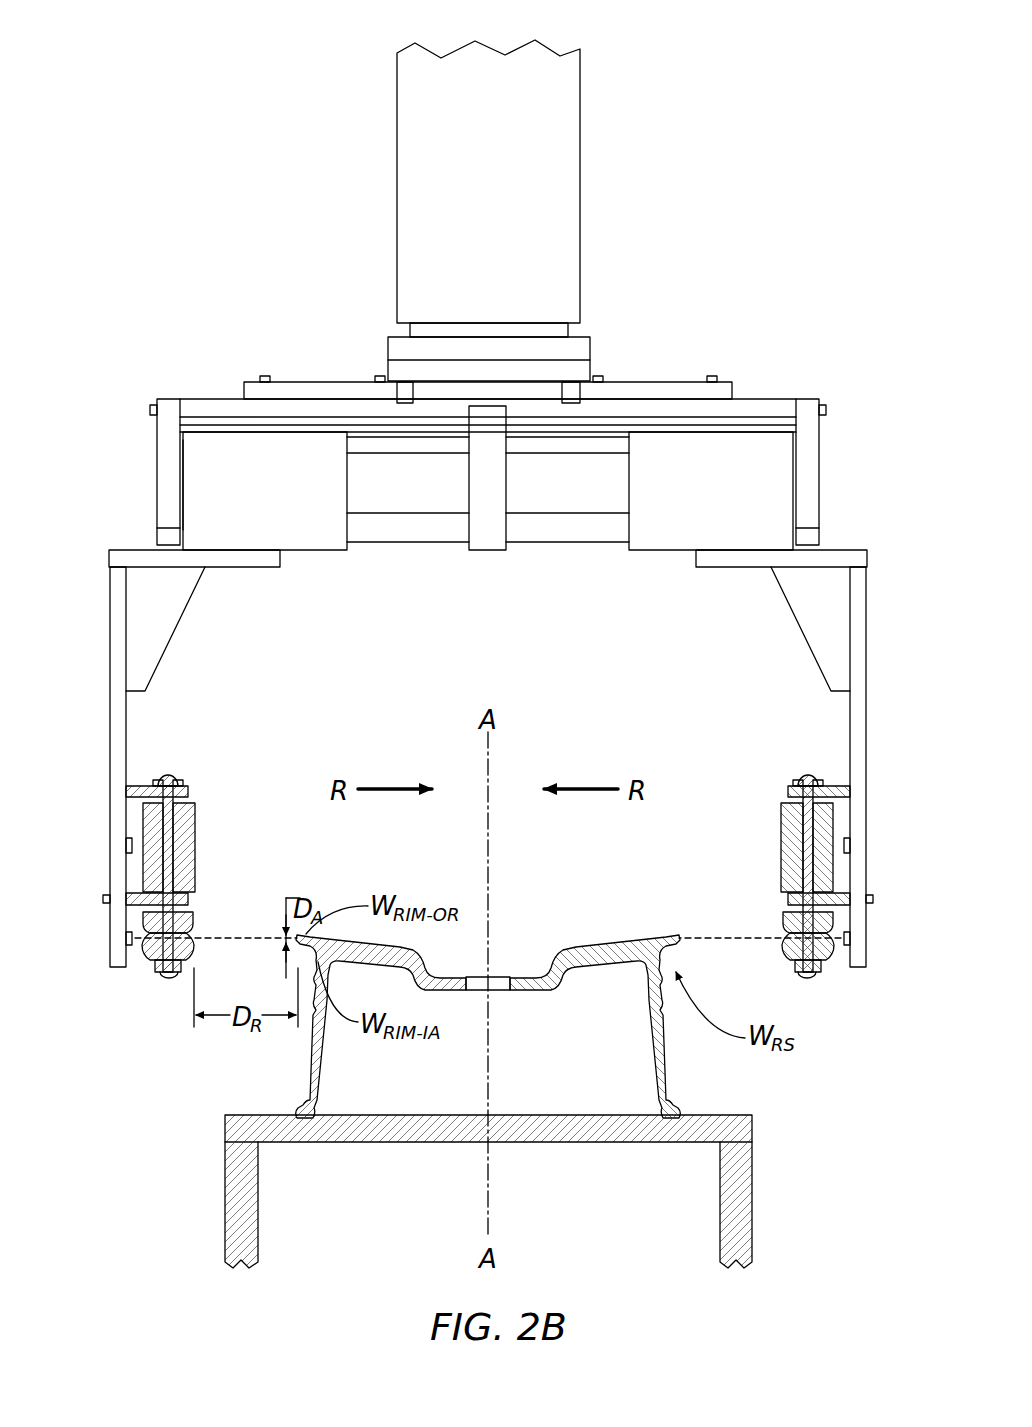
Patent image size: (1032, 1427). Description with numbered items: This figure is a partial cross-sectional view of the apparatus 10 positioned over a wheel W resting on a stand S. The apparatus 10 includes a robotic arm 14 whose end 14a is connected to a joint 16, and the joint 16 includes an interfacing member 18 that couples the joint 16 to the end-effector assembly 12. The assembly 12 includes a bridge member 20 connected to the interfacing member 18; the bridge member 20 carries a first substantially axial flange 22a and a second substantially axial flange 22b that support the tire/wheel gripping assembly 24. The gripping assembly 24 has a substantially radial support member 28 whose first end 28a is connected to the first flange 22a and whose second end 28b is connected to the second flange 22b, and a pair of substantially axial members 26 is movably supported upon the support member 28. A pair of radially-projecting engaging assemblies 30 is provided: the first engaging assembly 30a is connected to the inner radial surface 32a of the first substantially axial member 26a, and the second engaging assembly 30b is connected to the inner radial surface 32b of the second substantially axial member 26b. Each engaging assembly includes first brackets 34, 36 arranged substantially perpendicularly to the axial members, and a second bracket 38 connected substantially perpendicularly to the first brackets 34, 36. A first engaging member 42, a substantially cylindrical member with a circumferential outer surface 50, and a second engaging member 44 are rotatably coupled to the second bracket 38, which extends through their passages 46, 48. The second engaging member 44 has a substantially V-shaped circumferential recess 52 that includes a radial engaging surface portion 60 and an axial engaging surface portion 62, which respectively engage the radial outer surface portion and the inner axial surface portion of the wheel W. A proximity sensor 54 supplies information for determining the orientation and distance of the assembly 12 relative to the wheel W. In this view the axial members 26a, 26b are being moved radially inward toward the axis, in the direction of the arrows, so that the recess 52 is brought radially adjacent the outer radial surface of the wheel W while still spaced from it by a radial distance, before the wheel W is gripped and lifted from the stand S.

The apparatus 10 is at (150, 78).
The assembly 12 is at (152, 347).
The robotic arm 14 is at (366, 221).
The end of the robotic arm 14a is at (586, 318).
The joint 16 is at (373, 366).
The interfacing member 18 is at (601, 361).
The bridge member 20 is at (690, 366).
The first substantially axial flange 22a is at (151, 467).
The second substantially axial flange 22b is at (829, 467).
The tire/wheel gripping assembly 24 is at (79, 685).
The pair of substantially axial members 26 is at (108, 726).
The first substantially axial member 26a is at (108, 772).
The second substantially axial member 26b is at (867, 772).
The substantially radial support member 28 is at (405, 546).
The first end of the substantially radial support member 28a is at (187, 530).
The second end of the substantially radial support member 28b is at (788, 530).
The pair of radially-projecting engaging assemblies 30 is at (179, 768).
The first radially-projecting engaging assembly 30a is at (190, 778).
The second radially-projecting engaging assembly 30b is at (772, 859).
The inner radial surface of the first substantially axial member 32a is at (128, 727).
The inner radial surface of the second substantially axial member 32b is at (848, 727).
The first bracket 34 is at (137, 787).
The first bracket 36 is at (186, 900).
The second bracket 38 is at (168, 973).
The first engaging member 42 is at (201, 812).
The second engaging member 44 is at (197, 963).
The passage 46 is at (181, 848).
The passage 48 is at (191, 918).
The circumferential outer surface 50 is at (196, 872).
The substantially V-shaped circumferential recess 52 is at (189, 940).
The proximity sensor 54 is at (848, 860).
The radial engaging surface portion 60 is at (134, 939).
The axial engaging surface portion 62 is at (190, 963).
The wheel W is at (298, 1074).
The stand S is at (206, 1206).